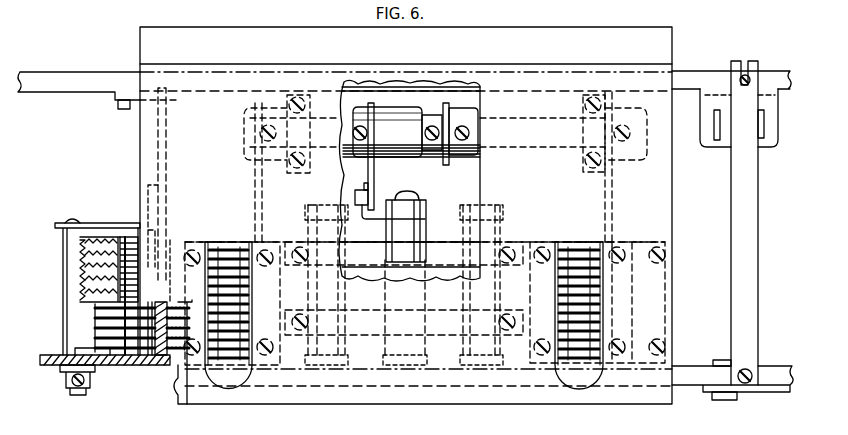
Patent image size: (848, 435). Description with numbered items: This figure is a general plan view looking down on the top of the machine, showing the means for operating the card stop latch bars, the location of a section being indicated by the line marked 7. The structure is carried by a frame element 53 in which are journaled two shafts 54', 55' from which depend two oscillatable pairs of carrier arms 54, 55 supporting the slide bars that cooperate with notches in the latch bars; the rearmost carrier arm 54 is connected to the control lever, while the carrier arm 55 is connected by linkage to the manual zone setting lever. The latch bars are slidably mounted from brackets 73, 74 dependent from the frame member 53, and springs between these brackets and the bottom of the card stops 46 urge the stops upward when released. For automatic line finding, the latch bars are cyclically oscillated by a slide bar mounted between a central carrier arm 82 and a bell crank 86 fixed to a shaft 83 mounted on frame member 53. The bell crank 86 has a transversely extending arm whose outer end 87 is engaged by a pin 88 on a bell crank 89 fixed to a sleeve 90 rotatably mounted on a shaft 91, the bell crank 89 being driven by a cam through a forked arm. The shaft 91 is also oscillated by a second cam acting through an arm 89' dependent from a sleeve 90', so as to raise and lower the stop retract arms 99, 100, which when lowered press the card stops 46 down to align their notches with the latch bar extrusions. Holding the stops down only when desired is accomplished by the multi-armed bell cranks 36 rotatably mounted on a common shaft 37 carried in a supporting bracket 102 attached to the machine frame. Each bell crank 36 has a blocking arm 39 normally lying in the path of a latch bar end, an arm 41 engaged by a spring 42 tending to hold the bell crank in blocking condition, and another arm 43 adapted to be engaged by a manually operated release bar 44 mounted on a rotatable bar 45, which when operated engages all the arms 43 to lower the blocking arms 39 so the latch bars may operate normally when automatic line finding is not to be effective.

The frame element 53 is at (45, 95).
The manually operated release bar 44 is at (108, 225).
The spring 42 is at (101, 236).
The supporting bracket 102 is at (125, 235).
The rotatable bar 45 is at (62, 243).
The section line 7- 7 is at (31, 315).
The arm 43 is at (95, 328).
The common shaft 37 is at (128, 358).
The arm 41 is at (152, 352).
The blocking arm 39 is at (175, 352).
The multi-armed bell crank 36 is at (178, 372).
The bracket 73 is at (176, 240).
The stop retract arm 99 is at (256, 200).
The card stop 46 is at (232, 258).
The bracket 74 is at (635, 290).
The stop retract arm 100 is at (614, 200).
The carrier arm 54 is at (347, 316).
The central carrier arm 82 is at (422, 366).
The carrier arm 55 is at (475, 299).
The shaft 54' is at (296, 208).
The shaft 55' is at (496, 187).
The pin 88 is at (355, 196).
The outer end 87 is at (364, 185).
The shaft 83 is at (407, 194).
The bell crank 86 is at (426, 222).
The bell crank 89 is at (385, 156).
The sleeve 90 is at (388, 96).
The arm 89' is at (456, 100).
The sleeve 90' is at (487, 125).
The shaft 91 is at (498, 150).